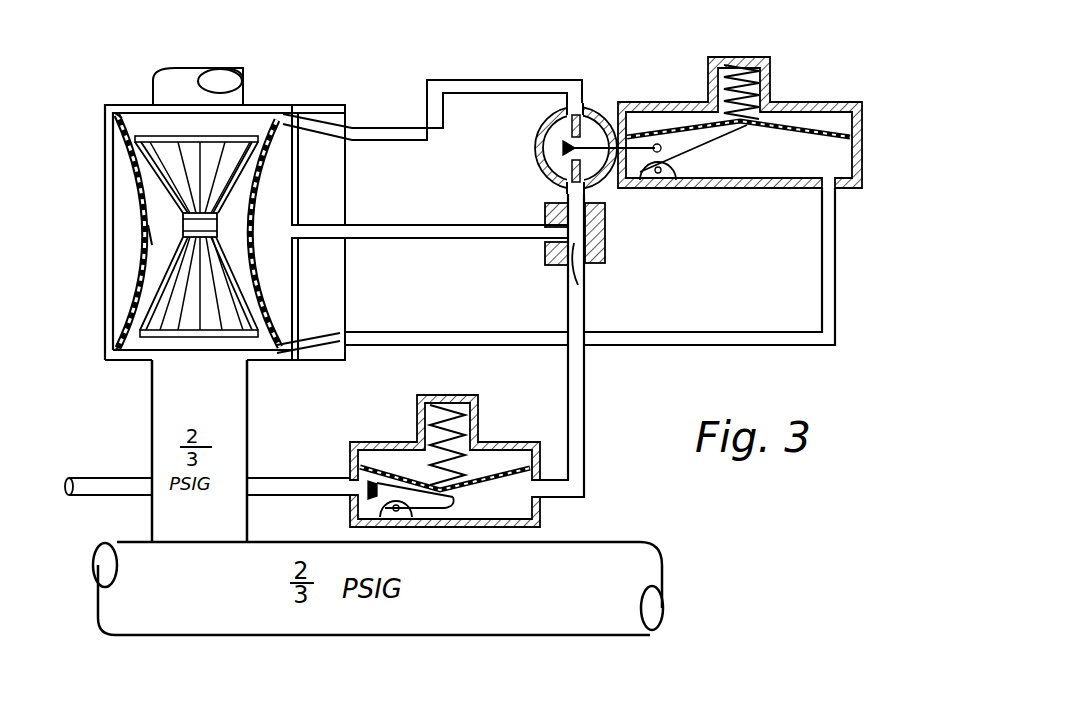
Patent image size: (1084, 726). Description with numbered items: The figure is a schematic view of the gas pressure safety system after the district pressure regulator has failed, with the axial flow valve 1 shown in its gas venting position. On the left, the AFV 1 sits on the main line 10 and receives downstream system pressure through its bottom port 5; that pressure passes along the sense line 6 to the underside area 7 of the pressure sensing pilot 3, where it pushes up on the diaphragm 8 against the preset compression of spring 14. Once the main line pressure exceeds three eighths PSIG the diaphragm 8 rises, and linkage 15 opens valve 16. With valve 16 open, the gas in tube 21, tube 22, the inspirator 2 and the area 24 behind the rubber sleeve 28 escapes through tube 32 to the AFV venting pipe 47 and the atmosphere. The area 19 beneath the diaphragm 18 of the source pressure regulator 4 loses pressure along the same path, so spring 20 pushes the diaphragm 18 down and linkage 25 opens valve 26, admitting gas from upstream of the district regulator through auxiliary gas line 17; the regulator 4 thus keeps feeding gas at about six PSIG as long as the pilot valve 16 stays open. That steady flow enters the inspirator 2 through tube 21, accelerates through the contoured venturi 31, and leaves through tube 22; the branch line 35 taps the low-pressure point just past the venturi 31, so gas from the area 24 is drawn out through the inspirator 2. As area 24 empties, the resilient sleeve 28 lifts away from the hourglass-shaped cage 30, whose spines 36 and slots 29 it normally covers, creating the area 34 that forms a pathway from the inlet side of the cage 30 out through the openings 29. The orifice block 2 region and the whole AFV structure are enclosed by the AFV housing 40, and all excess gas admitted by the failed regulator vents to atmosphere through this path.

The axial flow valve 1 is at (100, 311).
The inspirator 2 is at (605, 213).
The pressure sensing pilot 3 is at (837, 103).
The source pressure regulator 4 is at (330, 418).
The bottom port 5 is at (322, 347).
The sense line 6 is at (362, 338).
The underside area 7 is at (777, 165).
The diaphragm 8 is at (670, 127).
The main line 10 is at (607, 550).
The spring 14 is at (760, 90).
The linkage 15 is at (700, 143).
The valve 16 is at (560, 148).
The auxiliary gas line 17 is at (102, 485).
The diaphragm 18 is at (507, 470).
The area beneath diaphragm 19 is at (525, 512).
The spring 20 is at (462, 415).
The tube 21 is at (588, 398).
The tube 22 is at (557, 190).
The area behind sleeve 24 is at (127, 262).
The linkage 25 is at (458, 507).
The valve 26 is at (337, 505).
The rubber sleeve 28 is at (140, 173).
The slots 29 is at (240, 150).
The cage 30 is at (125, 122).
The venturi 31 is at (580, 283).
The tube 32 is at (505, 83).
The area inside cage 34 is at (150, 213).
The branch line 35 is at (540, 232).
The spines 36 is at (147, 143).
The AFV housing 40 is at (330, 200).
The AFV venting pipe 47 is at (187, 78).